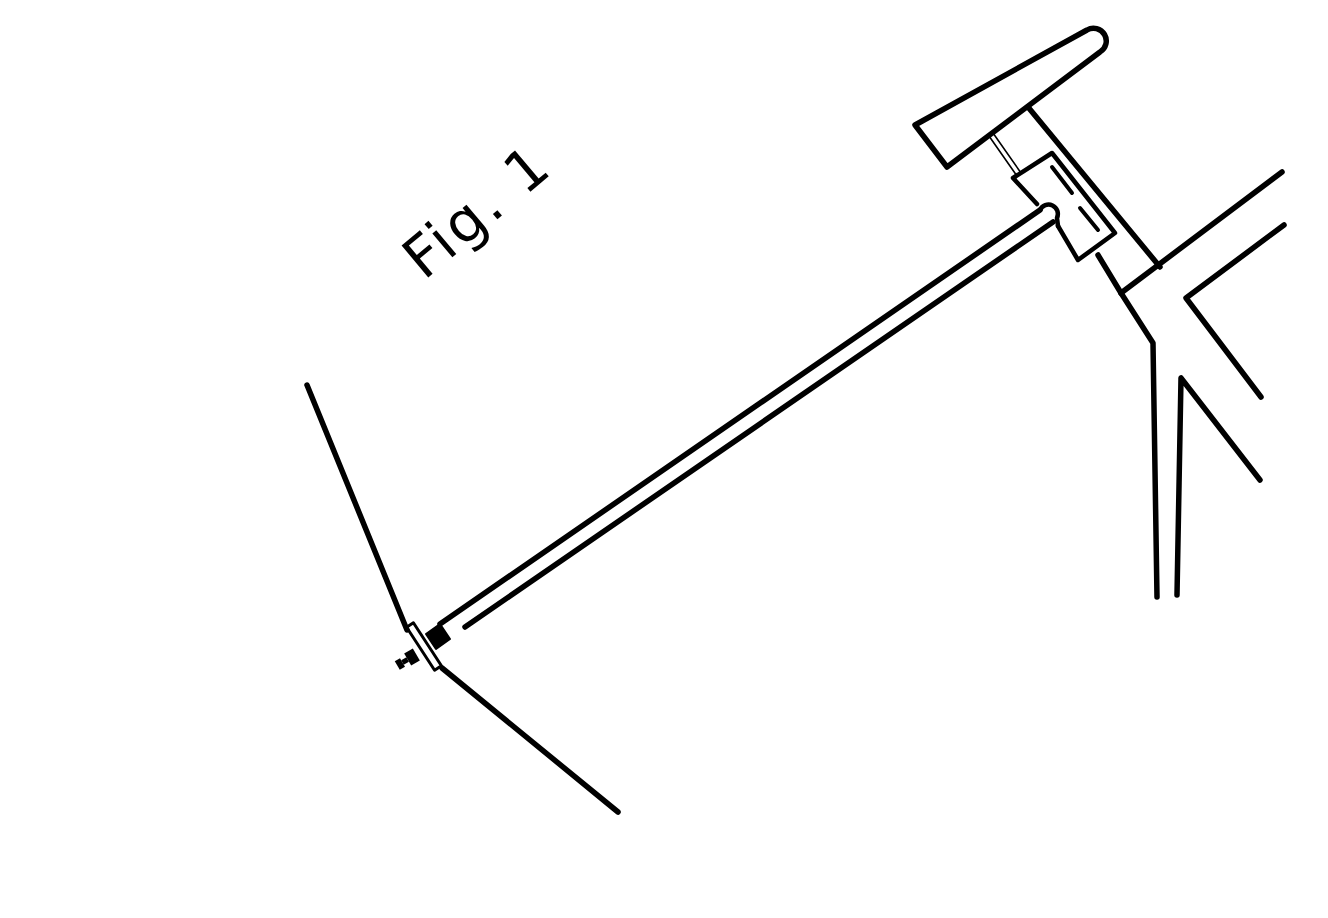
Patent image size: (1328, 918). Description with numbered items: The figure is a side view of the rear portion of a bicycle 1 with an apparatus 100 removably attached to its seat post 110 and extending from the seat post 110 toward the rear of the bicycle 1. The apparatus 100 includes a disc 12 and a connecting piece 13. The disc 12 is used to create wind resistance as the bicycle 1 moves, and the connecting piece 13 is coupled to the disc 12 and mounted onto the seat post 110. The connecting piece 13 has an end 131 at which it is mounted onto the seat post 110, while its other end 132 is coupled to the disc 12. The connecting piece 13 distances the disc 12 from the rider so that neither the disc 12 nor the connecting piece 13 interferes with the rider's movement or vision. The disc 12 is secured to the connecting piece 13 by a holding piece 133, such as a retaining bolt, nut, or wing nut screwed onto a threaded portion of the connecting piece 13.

The bicycle 1 is at (1099, 312).
The seat post 110 is at (1113, 283).
The apparatus 100 is at (636, 482).
The disc 12 is at (318, 450).
The connecting piece 13 is at (627, 493).
The end 131 is at (1020, 197).
The other end 132 is at (436, 624).
The holding piece 133 is at (417, 677).